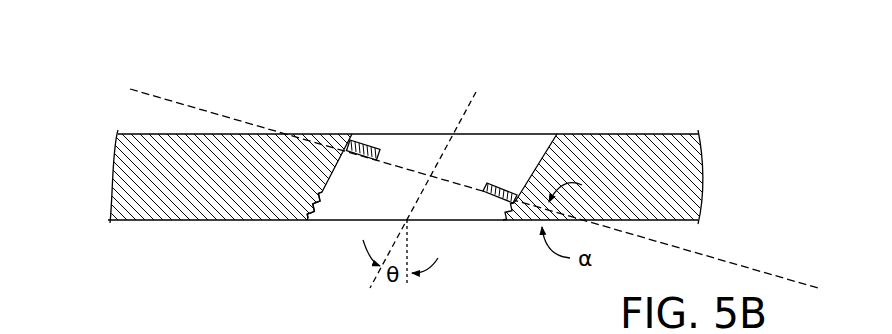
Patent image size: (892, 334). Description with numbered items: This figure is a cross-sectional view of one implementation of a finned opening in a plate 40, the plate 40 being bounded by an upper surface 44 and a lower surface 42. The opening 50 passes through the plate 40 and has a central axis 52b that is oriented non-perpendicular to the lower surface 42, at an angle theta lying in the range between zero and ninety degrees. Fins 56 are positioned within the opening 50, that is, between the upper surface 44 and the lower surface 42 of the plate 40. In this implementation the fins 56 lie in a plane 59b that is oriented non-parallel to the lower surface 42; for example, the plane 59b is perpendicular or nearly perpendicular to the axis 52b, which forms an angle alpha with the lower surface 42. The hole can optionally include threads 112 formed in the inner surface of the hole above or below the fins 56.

The plane 59b is at (173, 102).
The upper surface 44 is at (178, 135).
The fins 56 is at (370, 133).
The central axis 52b is at (467, 102).
The opening 50 is at (485, 142).
The plate 40 is at (608, 135).
The lower surface 42 is at (232, 222).
The threads 112 is at (316, 202).